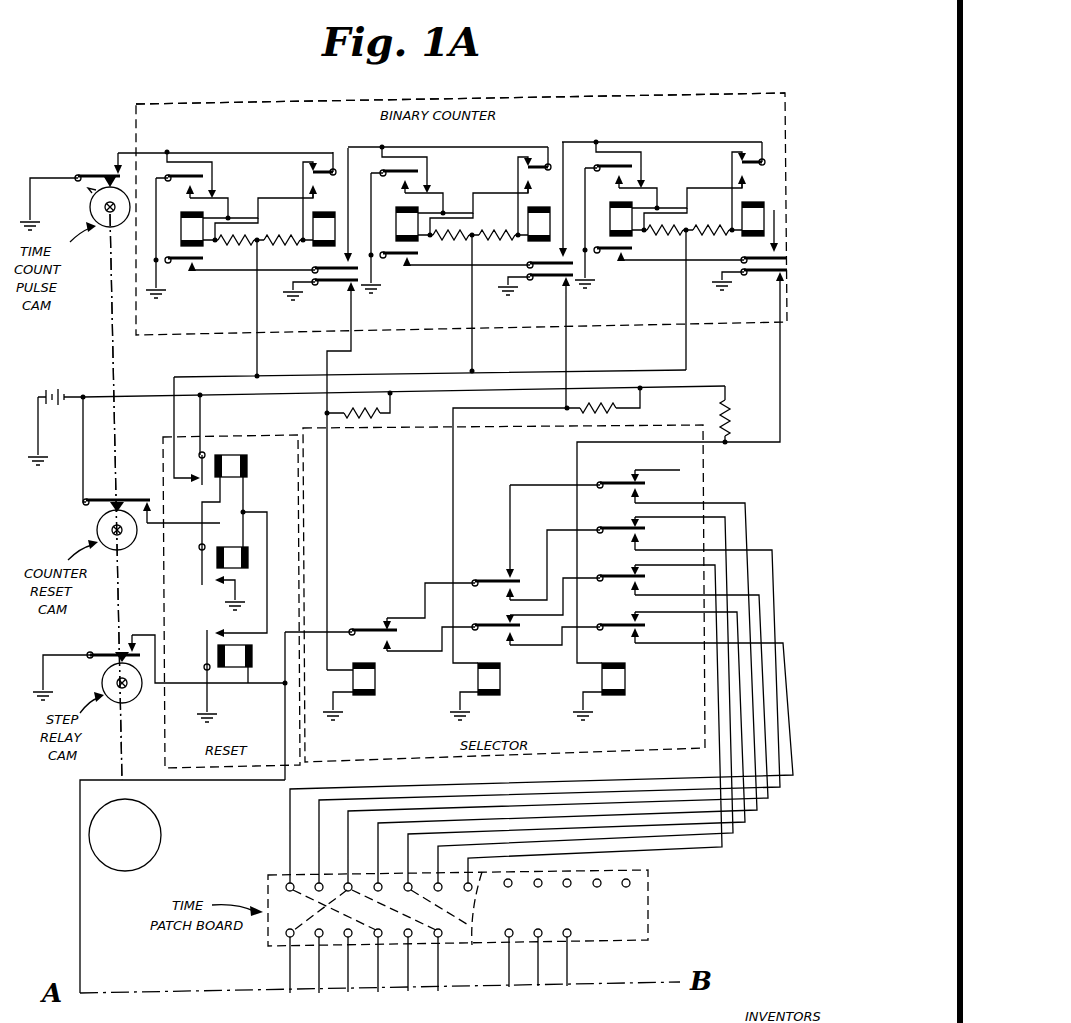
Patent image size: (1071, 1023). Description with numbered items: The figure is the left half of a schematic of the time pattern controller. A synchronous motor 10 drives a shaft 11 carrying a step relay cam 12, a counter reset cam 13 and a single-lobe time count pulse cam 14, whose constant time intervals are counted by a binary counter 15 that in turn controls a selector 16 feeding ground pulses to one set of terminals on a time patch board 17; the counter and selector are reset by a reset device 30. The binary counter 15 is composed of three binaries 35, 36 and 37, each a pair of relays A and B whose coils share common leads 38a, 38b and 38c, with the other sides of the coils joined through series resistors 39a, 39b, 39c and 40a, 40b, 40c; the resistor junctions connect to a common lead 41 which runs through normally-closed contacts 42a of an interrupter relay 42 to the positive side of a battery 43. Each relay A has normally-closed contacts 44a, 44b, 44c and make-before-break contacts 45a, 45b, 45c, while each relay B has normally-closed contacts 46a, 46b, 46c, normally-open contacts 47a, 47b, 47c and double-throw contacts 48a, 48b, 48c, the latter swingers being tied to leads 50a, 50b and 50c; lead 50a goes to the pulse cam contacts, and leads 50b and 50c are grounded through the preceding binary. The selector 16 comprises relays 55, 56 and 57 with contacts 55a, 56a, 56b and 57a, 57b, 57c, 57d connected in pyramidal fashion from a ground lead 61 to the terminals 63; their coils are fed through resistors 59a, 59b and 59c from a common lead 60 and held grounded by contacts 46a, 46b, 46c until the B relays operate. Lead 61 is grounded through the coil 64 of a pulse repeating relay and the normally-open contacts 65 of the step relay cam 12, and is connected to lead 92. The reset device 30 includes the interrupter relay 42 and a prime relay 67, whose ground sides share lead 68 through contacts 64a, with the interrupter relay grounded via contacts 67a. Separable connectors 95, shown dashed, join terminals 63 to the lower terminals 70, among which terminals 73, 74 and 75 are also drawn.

The synchronous motor 10 is at (162, 833).
The shaft 11 is at (126, 745).
The step relay cam 12 is at (102, 678).
The counter reset cam 13 is at (96, 527).
The time count pulse cam 14 is at (90, 208).
The binary counter 15 is at (262, 96).
The selector 16 is at (395, 768).
The time patch board 17 is at (659, 912).
The reset device 30 is at (166, 737).
The first binary 35 is at (228, 278).
The second binary 36 is at (443, 272).
The third binary 37 is at (645, 266).
The common lead 38a is at (246, 216).
The common lead 38b is at (459, 210).
The common lead 38c is at (671, 206).
The resistor 39a is at (250, 245).
The resistor 39b is at (462, 242).
The resistor 39c is at (679, 238).
The resistor 40a is at (296, 245).
The resistor 40b is at (506, 240).
The resistor 40c is at (710, 234).
The common lead 41 is at (406, 374).
The interrupter relay 42 is at (248, 467).
The normally-closed contacts 42a is at (208, 452).
The battery 43 is at (66, 390).
The normally-closed contacts 44a is at (180, 264).
The normally-closed contacts 44b is at (396, 260).
The normally-closed contacts 44c is at (612, 256).
The make-before-break contacts 45a is at (205, 177).
The make-before-break contacts 45b is at (420, 172).
The make-before-break contacts 45c is at (616, 164).
The normally-closed contacts 46a is at (342, 287).
The normally-closed contacts 46b is at (556, 282).
The normally-closed contacts 46c is at (760, 285).
The normally-open contacts 47a is at (312, 274).
The normally-open contacts 47b is at (556, 265).
The normally-open contacts 47c is at (768, 257).
The double-throw contacts 48a is at (331, 168).
The double-throw contacts 48b is at (545, 163).
The double-throw contacts 48c is at (759, 158).
The lead 50a is at (238, 152).
The lead 50b is at (455, 147).
The lead 50c is at (640, 142).
The selector relay 55 is at (376, 677).
The contacts 55a is at (377, 627).
The selector relay 56 is at (501, 677).
The contacts 56a is at (490, 614).
The contacts 56b is at (483, 578).
The selector relay 57 is at (626, 677).
The contacts 57a is at (620, 614).
The contacts 57b is at (620, 564).
The contacts 57c is at (620, 517).
The contacts 57d is at (620, 470).
The resistor 59a is at (364, 420).
The resistor 59b is at (624, 410).
The resistor 59c is at (735, 420).
The common lead 60 is at (435, 393).
The ground lead 61 is at (348, 628).
The terminals 63 is at (286, 881).
The coil of pulse repeating relay 64 is at (236, 670).
The normally-open contacts 64a is at (206, 641).
The normally-open contacts 65 is at (126, 646).
The prime relay 67 is at (250, 558).
The normally-open contacts 67a is at (202, 578).
The lead 68 is at (270, 600).
The terminals 70 is at (287, 938).
The terminal 73 is at (501, 956).
The terminal 74 is at (530, 955).
The terminal 75 is at (559, 955).
The common lead 92 is at (80, 893).
The separable connectors 95 is at (334, 903).